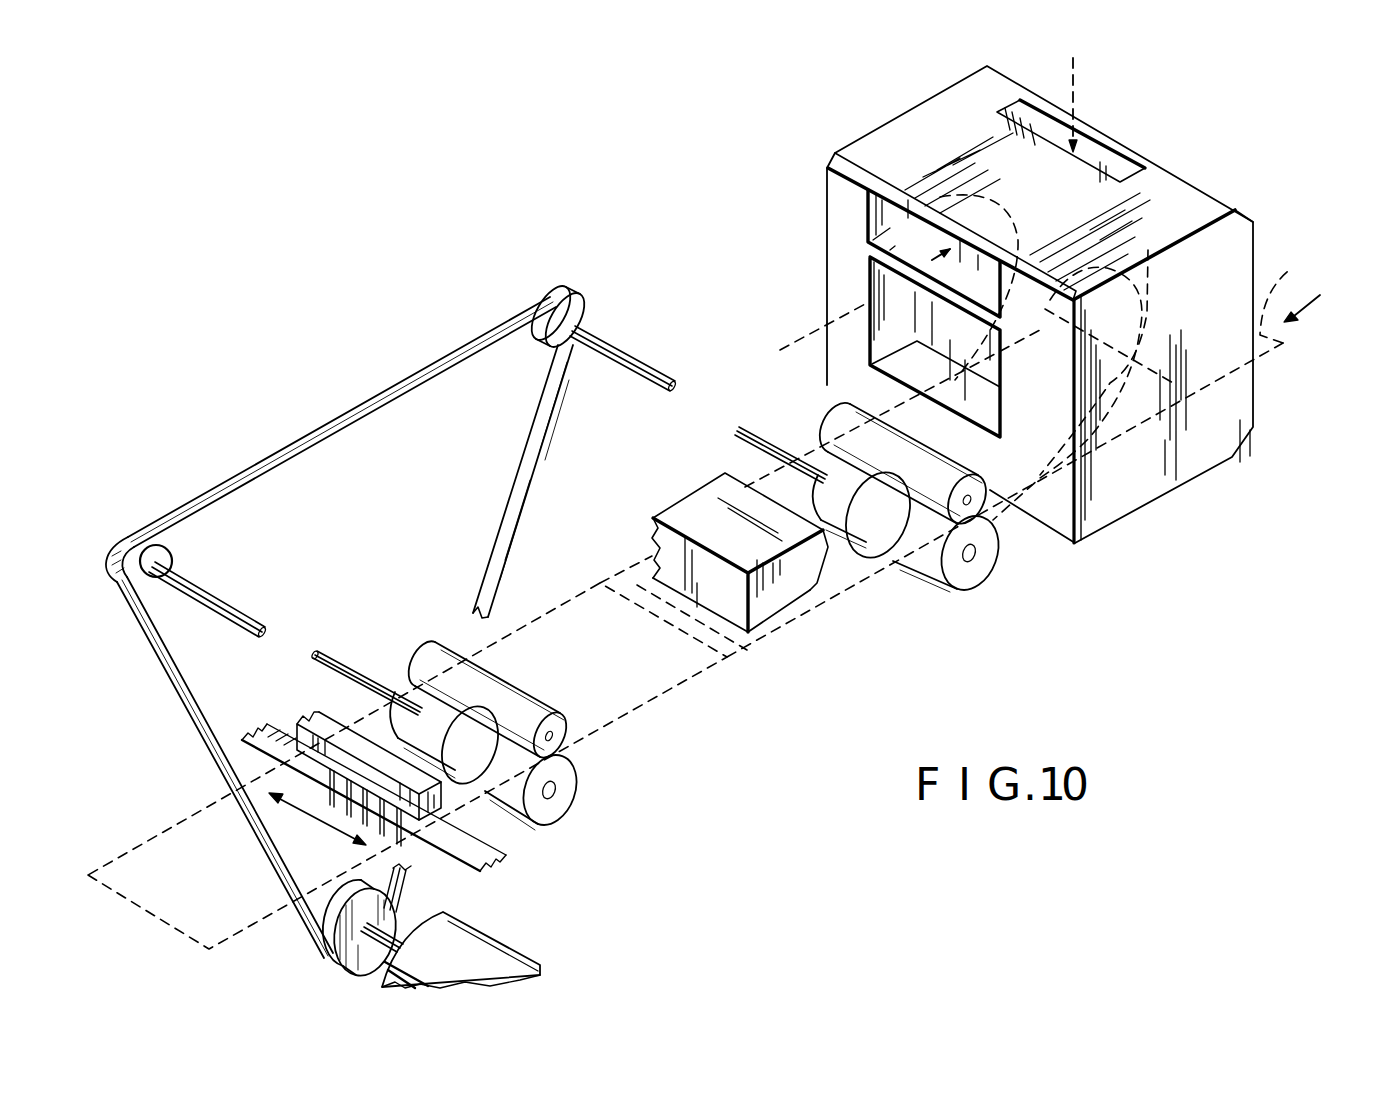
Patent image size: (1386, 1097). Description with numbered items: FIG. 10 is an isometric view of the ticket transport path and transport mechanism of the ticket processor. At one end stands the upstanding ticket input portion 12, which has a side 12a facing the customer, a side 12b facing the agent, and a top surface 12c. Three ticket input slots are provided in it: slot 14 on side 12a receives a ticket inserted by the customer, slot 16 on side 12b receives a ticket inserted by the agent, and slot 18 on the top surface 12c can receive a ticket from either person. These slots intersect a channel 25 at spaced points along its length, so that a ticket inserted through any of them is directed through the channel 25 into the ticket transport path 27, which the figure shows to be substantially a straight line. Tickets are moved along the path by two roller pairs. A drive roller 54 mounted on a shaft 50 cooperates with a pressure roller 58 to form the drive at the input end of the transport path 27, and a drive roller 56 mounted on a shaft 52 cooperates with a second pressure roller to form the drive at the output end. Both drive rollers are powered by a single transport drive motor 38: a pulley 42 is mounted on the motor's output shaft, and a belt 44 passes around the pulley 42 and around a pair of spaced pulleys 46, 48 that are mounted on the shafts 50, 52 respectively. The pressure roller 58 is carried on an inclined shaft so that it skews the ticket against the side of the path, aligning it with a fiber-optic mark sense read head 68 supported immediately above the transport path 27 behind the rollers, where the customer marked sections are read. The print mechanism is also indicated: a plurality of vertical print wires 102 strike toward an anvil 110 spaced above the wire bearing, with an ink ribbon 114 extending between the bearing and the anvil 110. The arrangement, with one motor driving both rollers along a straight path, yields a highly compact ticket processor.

The ticket input portion 12 is at (1235, 247).
The side of input portion 12a is at (1256, 406).
The side of input portion 12b is at (842, 215).
The top surface of input portion 12c is at (1173, 192).
The ticket input slot 14 is at (1302, 287).
The ticket input slot 16 is at (880, 193).
The ticket input slot 18 is at (1100, 157).
The channel 25 is at (1036, 357).
The ticket transport path 27 is at (579, 617).
The transport drive motor 38 is at (525, 957).
The pulley 42 is at (400, 913).
The belt 44 is at (445, 352).
The pulley 46 is at (573, 292).
The pulley 48 is at (118, 548).
The shaft 50 is at (600, 332).
The shaft 52 is at (198, 572).
The drive roller 54 is at (435, 642).
The drive roller 56 is at (570, 775).
The pressure roller 58 is at (845, 425).
The fiber-optic mark sense read head 68 is at (675, 505).
The print wires 102 is at (303, 815).
The anvil 110 is at (315, 715).
The ink ribbon 114 is at (498, 858).